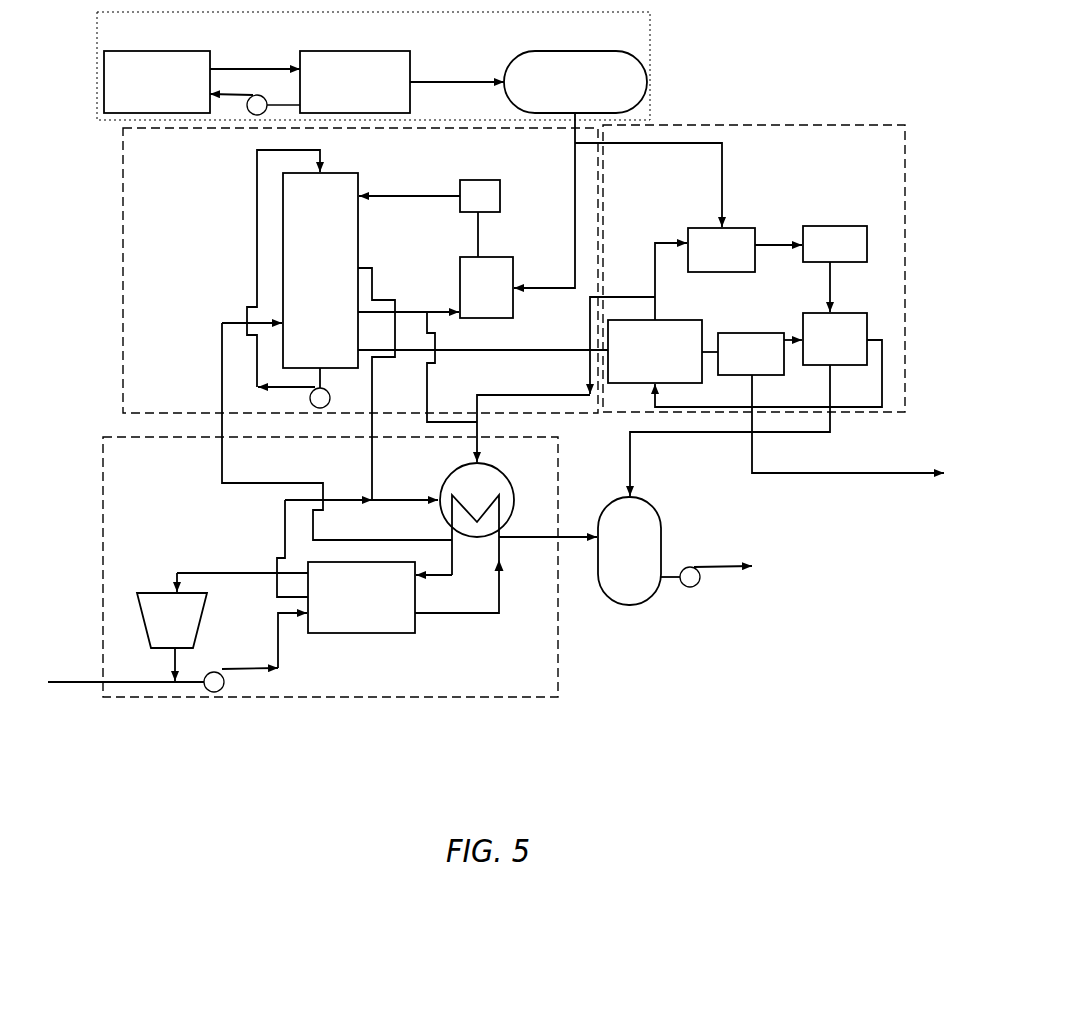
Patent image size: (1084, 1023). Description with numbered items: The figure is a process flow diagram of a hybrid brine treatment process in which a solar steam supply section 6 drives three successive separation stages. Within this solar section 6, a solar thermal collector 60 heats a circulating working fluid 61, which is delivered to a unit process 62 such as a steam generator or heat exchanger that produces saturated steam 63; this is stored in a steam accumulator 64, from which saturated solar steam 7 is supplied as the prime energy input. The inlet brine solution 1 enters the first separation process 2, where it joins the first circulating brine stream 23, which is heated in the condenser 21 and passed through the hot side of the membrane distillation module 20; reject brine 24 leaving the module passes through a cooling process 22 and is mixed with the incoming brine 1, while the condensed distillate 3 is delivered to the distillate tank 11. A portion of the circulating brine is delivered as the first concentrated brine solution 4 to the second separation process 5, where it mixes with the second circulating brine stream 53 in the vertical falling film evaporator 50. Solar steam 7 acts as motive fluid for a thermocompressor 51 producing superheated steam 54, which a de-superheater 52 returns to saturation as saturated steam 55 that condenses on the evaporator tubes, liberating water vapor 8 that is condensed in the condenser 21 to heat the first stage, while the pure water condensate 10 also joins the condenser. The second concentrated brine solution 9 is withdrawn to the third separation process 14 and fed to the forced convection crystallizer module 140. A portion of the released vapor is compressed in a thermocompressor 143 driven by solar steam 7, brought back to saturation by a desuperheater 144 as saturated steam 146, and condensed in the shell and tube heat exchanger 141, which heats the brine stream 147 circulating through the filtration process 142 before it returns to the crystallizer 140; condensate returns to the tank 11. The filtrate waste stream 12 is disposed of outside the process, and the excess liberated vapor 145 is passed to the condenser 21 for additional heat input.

The inlet brine solution 1 is at (90, 678).
The first separation process 2 is at (102, 498).
The condensed distillate 3 is at (280, 537).
The first concentrated brine solution 4 is at (218, 470).
The second separation process 5 is at (121, 320).
The control unit 6 is at (96, 72).
The high temperature heat 7 is at (572, 186).
The water vapor 8 is at (430, 395).
The second concentrated brine solution 9 is at (542, 347).
The pure water condensate 10 is at (377, 276).
The distillate tank 11 is at (675, 551).
The filtrate waste stream 12 is at (828, 472).
The third separation process 14 is at (906, 152).
The membrane distillation module 20 is at (361, 597).
The condenser 21 is at (510, 473).
The cooling process 22 is at (172, 637).
The first circulating brine stream 23 is at (468, 622).
The reject brine 24 is at (168, 573).
The vertical falling film evaporator 50 is at (320, 270).
The thermocompressor 51 is at (486, 287).
The de-superheater 52 is at (480, 196).
The second circulating brine stream 53 is at (248, 200).
The superheated steam 54 is at (482, 238).
The saturated steam 55 is at (377, 190).
The solar thermal collector 60 is at (157, 82).
The circulating working fluid 61 is at (268, 65).
The unit process for producing saturated steam 62 is at (355, 82).
The saturated steam 63 is at (445, 78).
The steam accumulator 64 is at (575, 82).
The forced convection crystallizer module 140 is at (655, 351).
The condensing heat exchanger 141 is at (835, 339).
The filtration process 142 is at (751, 354).
The thermocompressor 143 is at (721, 250).
The desuperheater 144 is at (835, 244).
The vapor stream 145 is at (658, 309).
The saturated steam 146 is at (834, 300).
The brine stream 147 is at (708, 348).